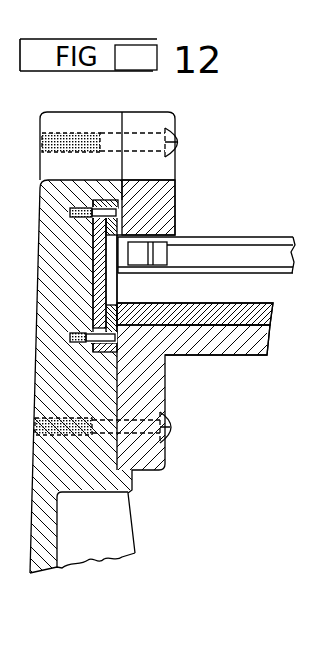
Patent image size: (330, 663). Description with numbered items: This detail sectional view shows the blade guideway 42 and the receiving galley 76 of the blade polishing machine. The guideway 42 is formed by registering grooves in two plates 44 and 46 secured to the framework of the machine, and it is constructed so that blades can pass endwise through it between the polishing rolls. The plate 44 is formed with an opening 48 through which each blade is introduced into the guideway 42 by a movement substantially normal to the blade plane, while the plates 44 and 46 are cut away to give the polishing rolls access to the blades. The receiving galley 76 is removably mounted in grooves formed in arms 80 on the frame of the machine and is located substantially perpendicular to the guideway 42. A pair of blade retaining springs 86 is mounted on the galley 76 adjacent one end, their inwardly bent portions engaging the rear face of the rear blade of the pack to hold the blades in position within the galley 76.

The spacer block 42 is at (117, 236).
The retaining block 44 is at (120, 210).
The screw 46 is at (93, 200).
The sleeve 48 is at (118, 289).
The flange 76 is at (220, 318).
The mounting block 80 is at (252, 348).
The tube 86 is at (245, 252).